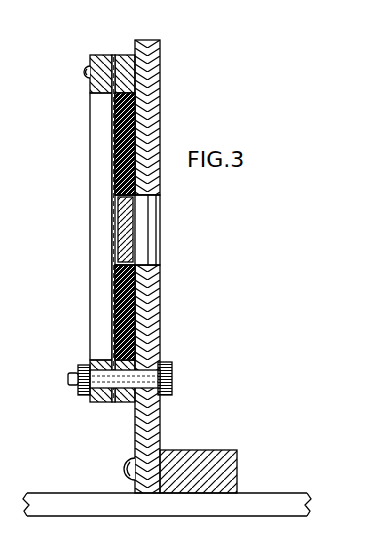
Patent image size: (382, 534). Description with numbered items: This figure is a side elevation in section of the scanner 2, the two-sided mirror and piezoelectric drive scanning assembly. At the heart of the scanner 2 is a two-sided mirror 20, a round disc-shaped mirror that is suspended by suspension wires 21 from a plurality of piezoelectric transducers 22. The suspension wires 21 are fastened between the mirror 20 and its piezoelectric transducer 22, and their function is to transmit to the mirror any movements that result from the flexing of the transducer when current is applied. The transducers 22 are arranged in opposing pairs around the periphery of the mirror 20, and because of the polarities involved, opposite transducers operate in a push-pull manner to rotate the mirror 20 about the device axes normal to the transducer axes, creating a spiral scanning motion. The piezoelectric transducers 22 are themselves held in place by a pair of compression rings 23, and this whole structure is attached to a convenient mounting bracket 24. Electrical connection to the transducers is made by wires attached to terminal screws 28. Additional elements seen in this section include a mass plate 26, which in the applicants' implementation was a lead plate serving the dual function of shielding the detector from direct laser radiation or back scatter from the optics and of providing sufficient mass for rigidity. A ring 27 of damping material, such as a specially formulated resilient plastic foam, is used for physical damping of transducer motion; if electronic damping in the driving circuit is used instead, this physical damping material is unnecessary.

The scanner 2 is at (185, 333).
The two-sided mirror 20 is at (128, 223).
The suspension wires 21 is at (114, 200).
The piezoelectric transducers 22 is at (98, 146).
The compression rings 23 is at (124, 54).
The mounting bracket 24 is at (138, 443).
The mass plate 26 is at (157, 289).
The ring of damping material 27 is at (142, 115).
The terminal screws 28 is at (85, 71).